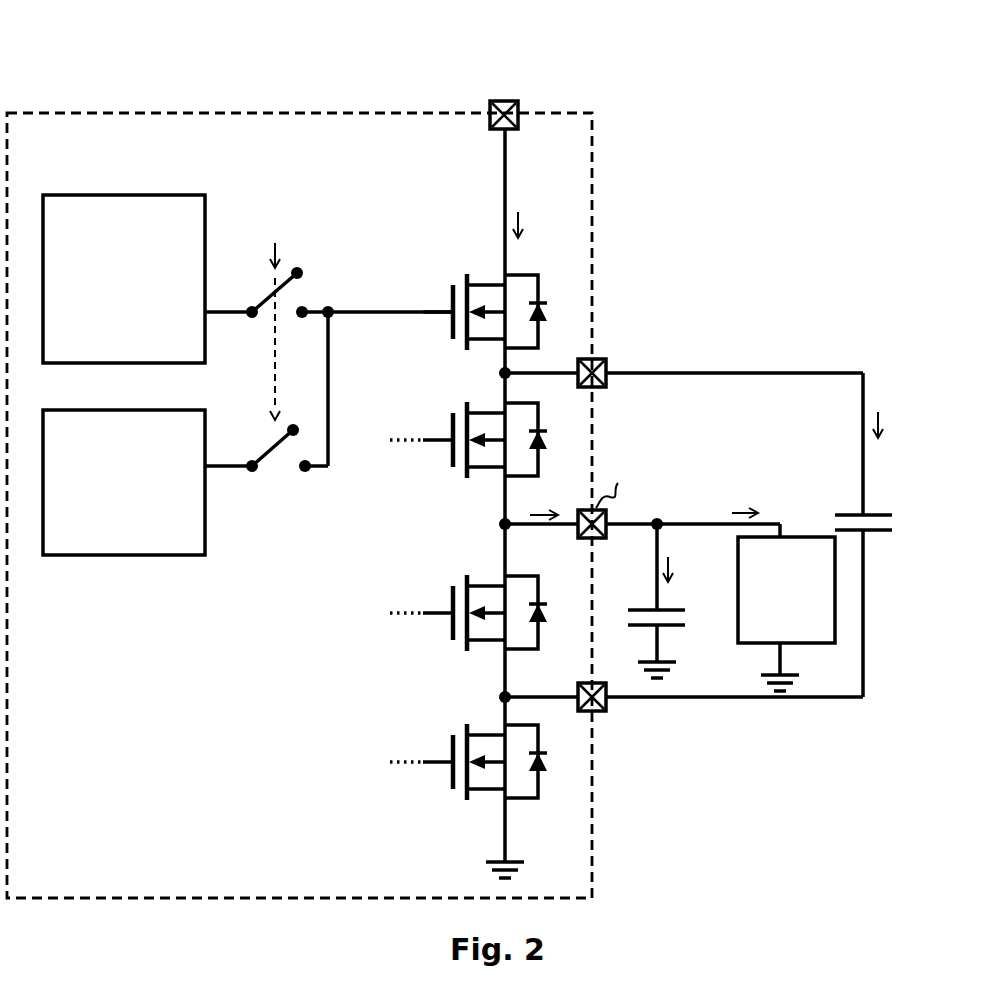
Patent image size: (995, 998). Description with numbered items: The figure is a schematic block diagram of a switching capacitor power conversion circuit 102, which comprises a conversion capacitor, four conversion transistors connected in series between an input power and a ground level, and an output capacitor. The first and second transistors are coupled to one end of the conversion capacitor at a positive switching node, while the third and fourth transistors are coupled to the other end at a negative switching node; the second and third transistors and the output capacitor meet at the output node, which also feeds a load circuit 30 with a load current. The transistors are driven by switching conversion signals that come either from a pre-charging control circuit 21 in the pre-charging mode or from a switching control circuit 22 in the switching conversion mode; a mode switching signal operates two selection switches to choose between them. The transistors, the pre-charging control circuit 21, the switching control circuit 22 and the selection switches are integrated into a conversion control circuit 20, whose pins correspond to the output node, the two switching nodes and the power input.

The switching capacitor power conversion circuit 102 is at (122, 58).
The conversion control circuit 20 is at (114, 885).
The pre-charging control circuit 21 is at (114, 308).
The switching control circuit 22 is at (114, 528).
The load circuit 30 is at (776, 614).